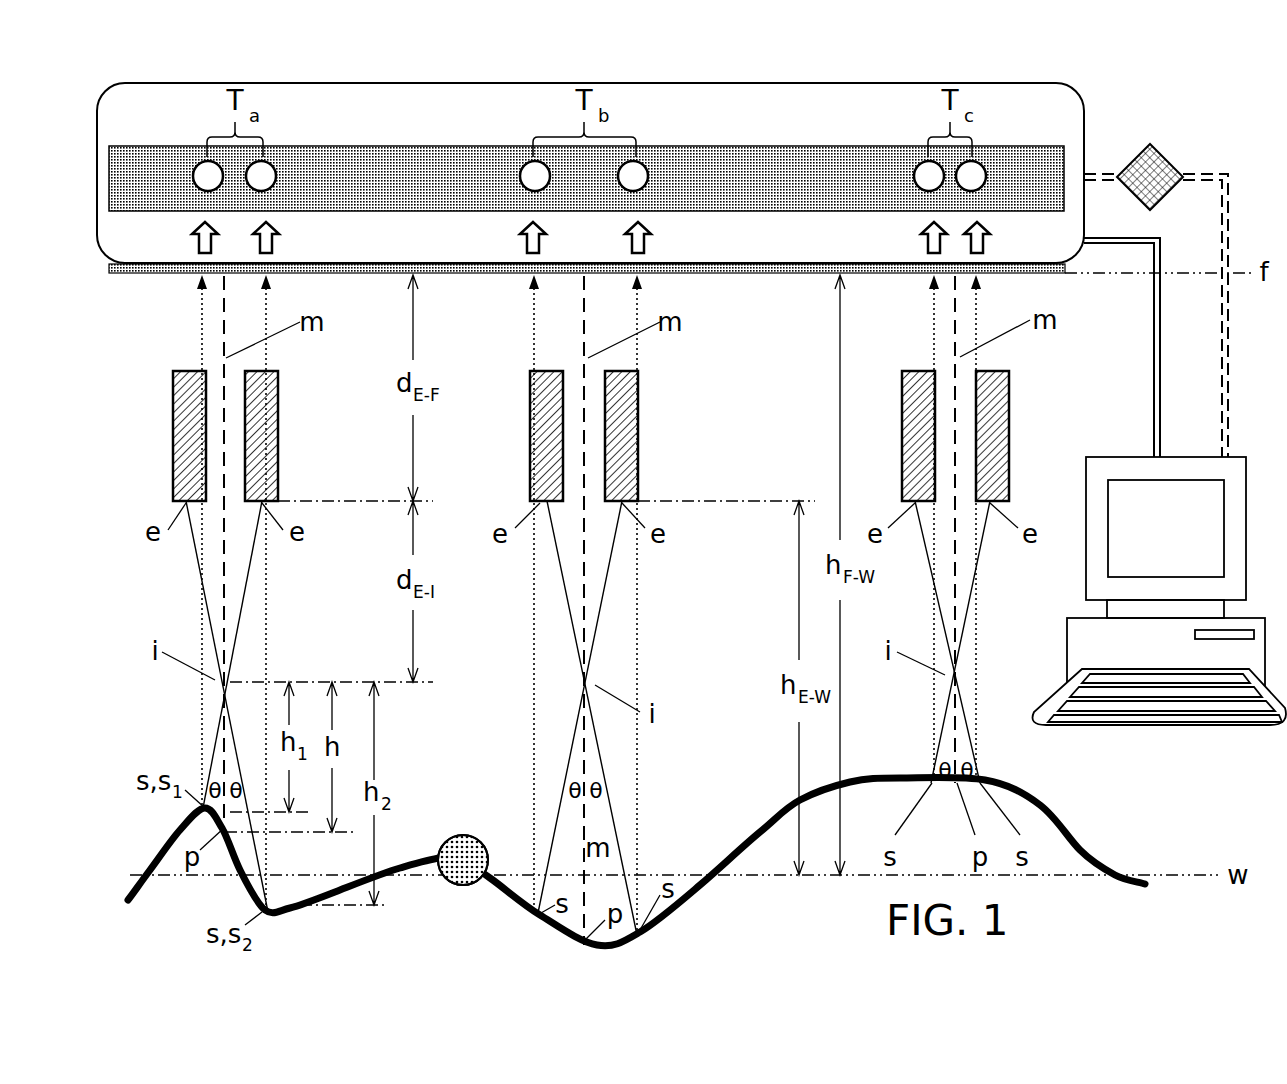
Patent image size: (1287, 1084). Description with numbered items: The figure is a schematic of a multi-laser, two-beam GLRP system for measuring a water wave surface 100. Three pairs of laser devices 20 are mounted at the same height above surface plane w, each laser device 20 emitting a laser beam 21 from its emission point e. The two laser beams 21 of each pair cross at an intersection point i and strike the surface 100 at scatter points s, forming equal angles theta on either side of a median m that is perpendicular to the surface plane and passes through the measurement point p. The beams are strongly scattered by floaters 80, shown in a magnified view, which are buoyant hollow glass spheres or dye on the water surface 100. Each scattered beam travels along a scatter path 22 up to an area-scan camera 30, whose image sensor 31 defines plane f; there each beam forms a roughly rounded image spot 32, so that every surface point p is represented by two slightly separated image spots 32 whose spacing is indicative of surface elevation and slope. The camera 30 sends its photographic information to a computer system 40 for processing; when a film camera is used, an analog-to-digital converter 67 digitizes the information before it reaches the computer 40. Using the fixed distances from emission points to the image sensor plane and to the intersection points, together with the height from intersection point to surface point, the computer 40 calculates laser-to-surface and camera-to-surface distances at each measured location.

The laser device 20 is at (168, 445).
The laser beam 21 is at (196, 555).
The scatter path 22 is at (268, 545).
The area-scan camera 30 is at (1088, 140).
The image sensor 31 is at (795, 183).
The image spot 32 is at (200, 157).
The computer system 40 is at (1150, 545).
The analog-to-digital converter 67 is at (1172, 160).
The floaters 80 is at (455, 837).
The surface 100 is at (1075, 808).